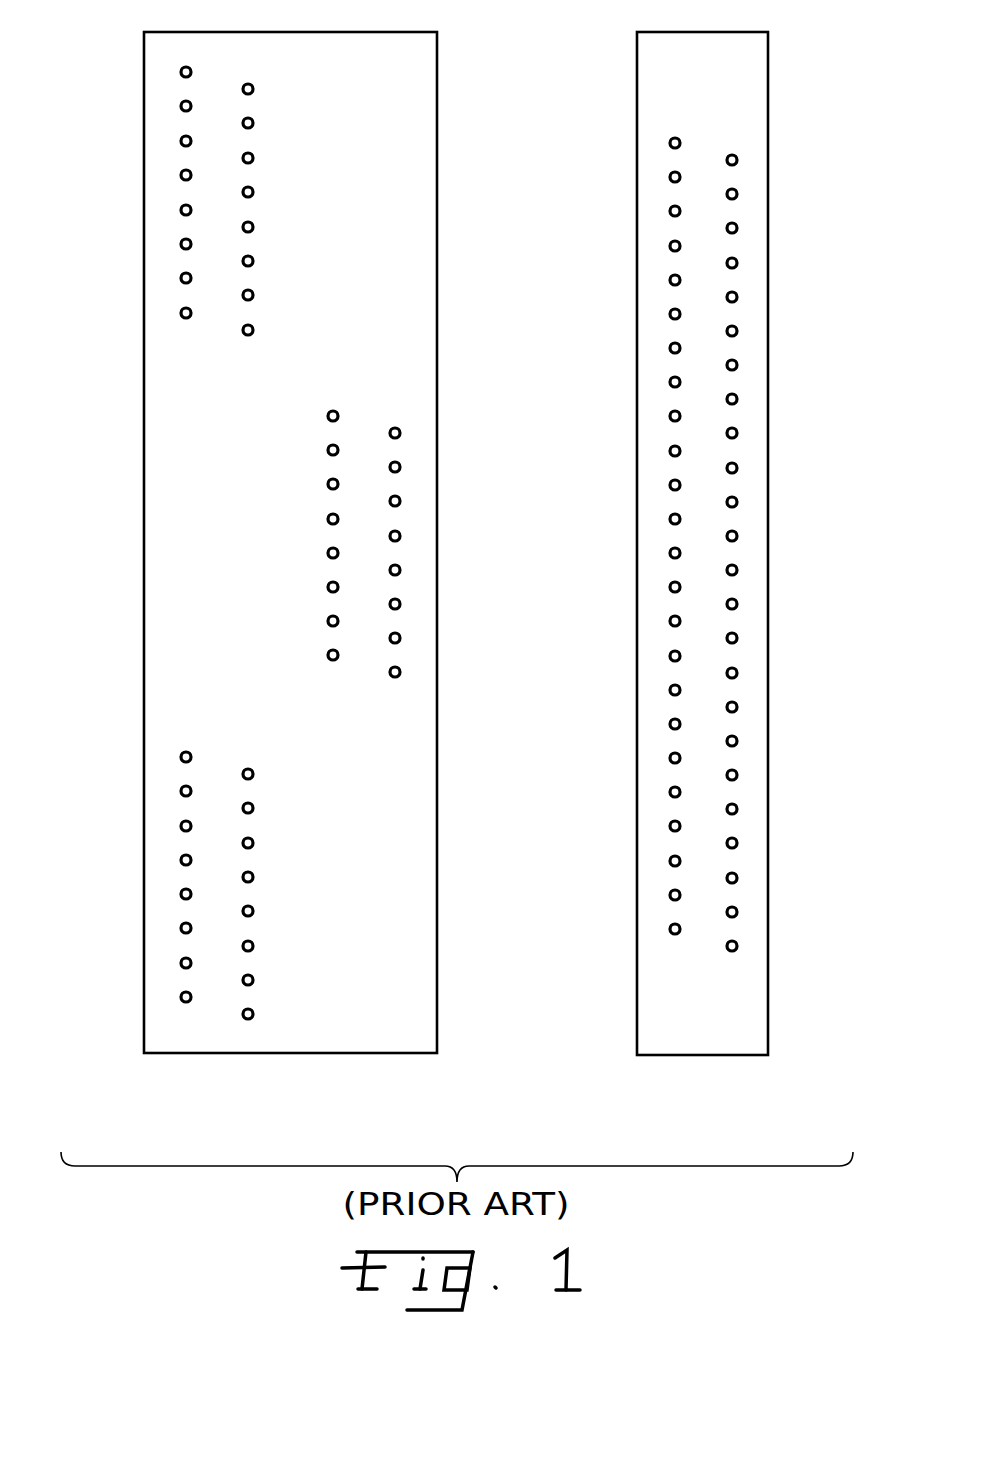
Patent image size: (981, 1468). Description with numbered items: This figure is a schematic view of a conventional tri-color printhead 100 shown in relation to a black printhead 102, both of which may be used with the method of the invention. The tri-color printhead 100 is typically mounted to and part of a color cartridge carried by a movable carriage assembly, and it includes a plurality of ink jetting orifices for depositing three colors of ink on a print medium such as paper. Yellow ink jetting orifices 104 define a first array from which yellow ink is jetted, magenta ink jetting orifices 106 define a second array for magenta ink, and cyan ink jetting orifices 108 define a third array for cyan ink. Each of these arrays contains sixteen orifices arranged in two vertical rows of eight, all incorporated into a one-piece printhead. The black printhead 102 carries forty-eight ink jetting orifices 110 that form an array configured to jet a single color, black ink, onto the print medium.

The tri-color printhead 100 is at (144, 450).
The black printhead 102 is at (769, 540).
The yellow ink jetting orifices 104 is at (277, 885).
The magenta ink jetting orifices 106 is at (322, 547).
The cyan ink jetting orifices 108 is at (280, 175).
The ink jetting orifices 110 is at (730, 153).